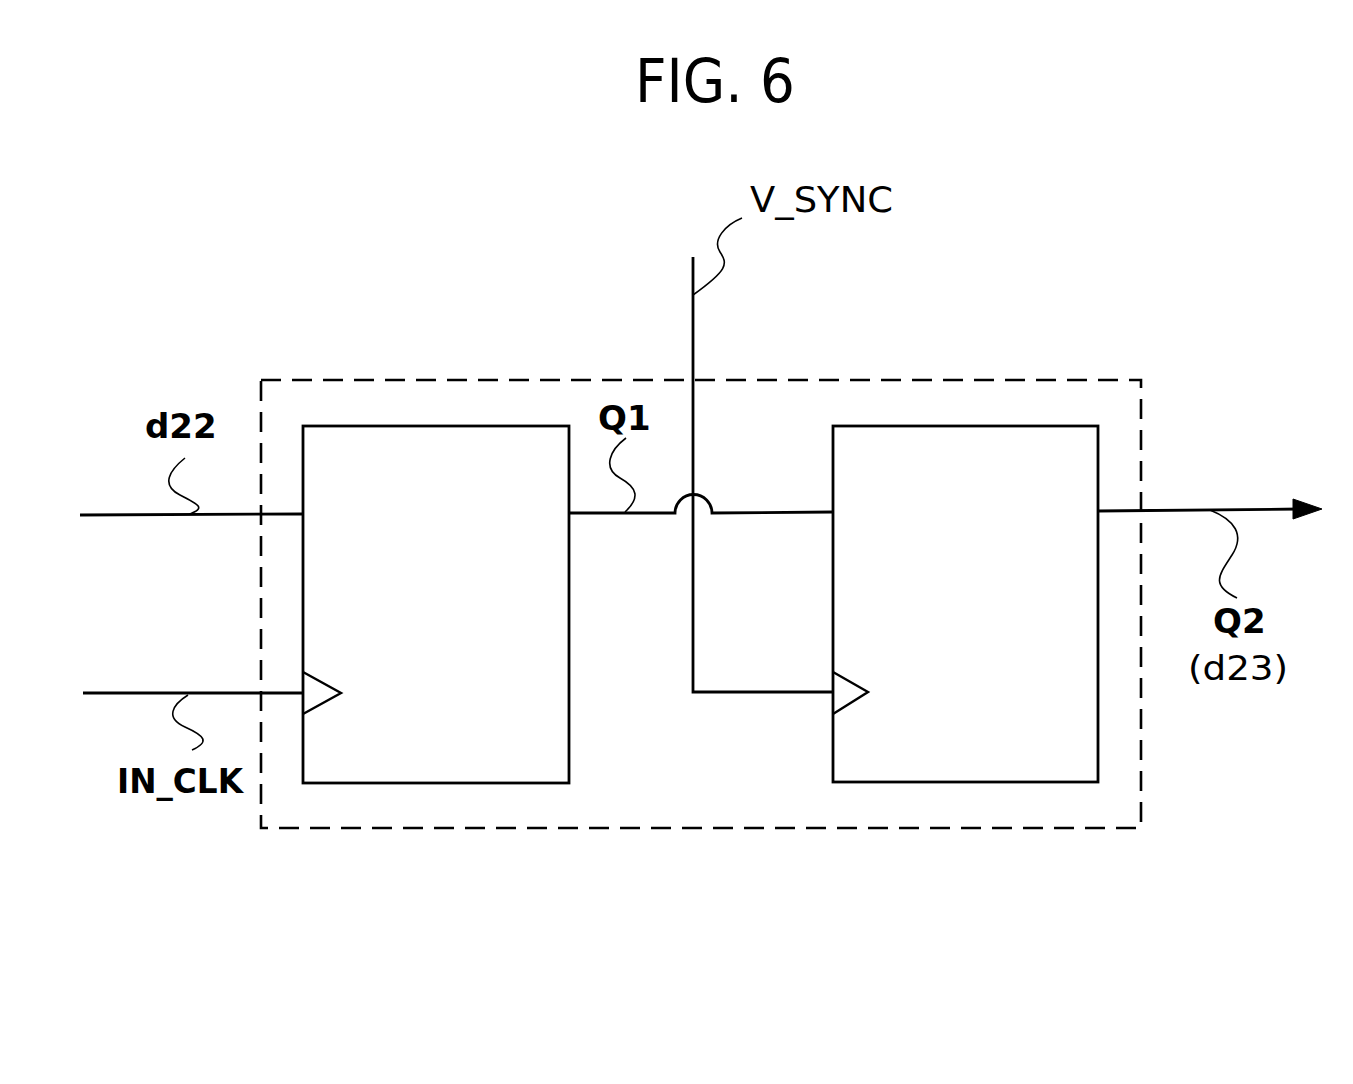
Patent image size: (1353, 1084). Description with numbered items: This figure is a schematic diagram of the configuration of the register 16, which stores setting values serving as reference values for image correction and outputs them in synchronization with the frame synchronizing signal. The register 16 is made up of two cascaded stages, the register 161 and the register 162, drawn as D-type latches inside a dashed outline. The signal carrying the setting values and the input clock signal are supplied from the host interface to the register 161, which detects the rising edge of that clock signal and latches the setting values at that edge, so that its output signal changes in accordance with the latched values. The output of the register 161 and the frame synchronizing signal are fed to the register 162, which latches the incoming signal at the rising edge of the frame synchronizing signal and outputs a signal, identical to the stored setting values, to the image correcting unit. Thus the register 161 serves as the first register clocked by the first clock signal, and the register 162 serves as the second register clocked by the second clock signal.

The register 16 is at (697, 830).
The register 161 is at (437, 426).
The register 162 is at (965, 426).